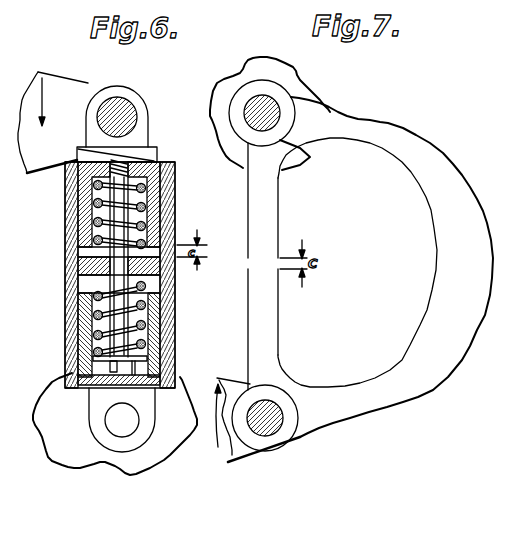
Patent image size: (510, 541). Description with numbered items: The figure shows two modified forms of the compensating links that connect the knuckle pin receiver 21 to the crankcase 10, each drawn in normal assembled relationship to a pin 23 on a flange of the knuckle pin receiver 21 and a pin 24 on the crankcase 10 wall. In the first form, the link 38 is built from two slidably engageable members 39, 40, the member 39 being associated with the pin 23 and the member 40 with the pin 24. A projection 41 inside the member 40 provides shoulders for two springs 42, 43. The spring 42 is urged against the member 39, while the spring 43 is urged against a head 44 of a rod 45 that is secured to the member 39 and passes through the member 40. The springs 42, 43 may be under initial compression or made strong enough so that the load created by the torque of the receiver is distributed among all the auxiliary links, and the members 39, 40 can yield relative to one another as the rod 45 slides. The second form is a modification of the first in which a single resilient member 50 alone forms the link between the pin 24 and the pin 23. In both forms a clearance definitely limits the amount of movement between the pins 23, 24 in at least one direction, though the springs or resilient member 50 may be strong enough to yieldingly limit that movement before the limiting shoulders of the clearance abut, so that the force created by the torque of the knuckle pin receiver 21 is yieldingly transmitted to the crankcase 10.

In FIG. 6, the crankcase 10 is at (140, 463).
In FIG. 7, the crankcase 10 is at (275, 65).
In FIG. 6, the knuckle pin receiver 21 is at (100, 67).
In FIG. 7, the knuckle pin receiver 21 is at (250, 455).
In FIG. 6, the pins 23 is at (137, 110).
In FIG. 7, the pins 23 is at (275, 430).
In FIG. 6, the pins 24 is at (127, 420).
In FIG. 7, the pins 24 is at (278, 111).
In FIG. 6, the link 38 is at (161, 160).
In FIG. 6, the member 39 is at (80, 155).
In FIG. 6, the member 40 is at (72, 328).
In FIG. 6, the projection 41 is at (97, 265).
In FIG. 6, the spring 42 is at (143, 210).
In FIG. 6, the spring 43 is at (145, 325).
In FIG. 6, the head 44 is at (100, 378).
In FIG. 6, the rod 45 is at (122, 292).
In FIG. 7, the resilient member 50 is at (445, 262).